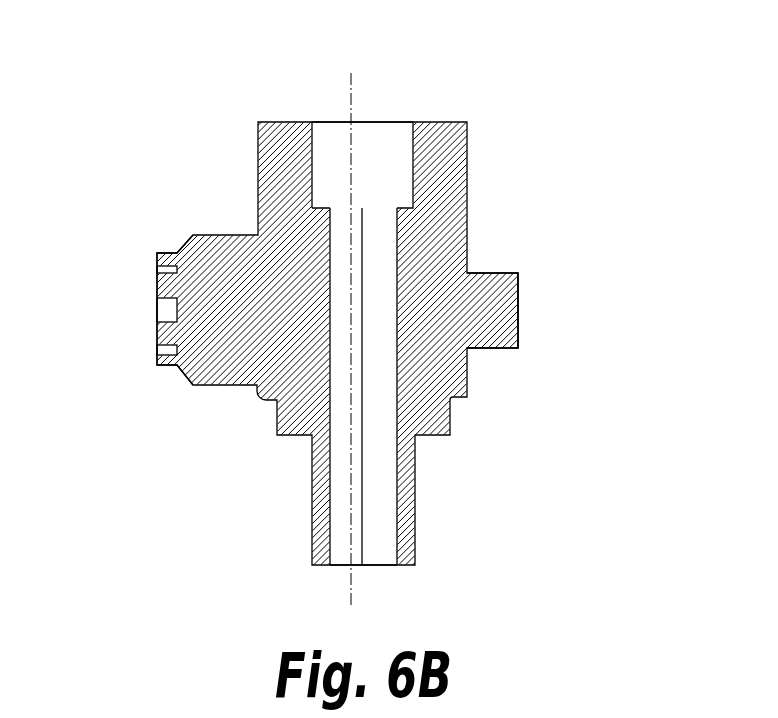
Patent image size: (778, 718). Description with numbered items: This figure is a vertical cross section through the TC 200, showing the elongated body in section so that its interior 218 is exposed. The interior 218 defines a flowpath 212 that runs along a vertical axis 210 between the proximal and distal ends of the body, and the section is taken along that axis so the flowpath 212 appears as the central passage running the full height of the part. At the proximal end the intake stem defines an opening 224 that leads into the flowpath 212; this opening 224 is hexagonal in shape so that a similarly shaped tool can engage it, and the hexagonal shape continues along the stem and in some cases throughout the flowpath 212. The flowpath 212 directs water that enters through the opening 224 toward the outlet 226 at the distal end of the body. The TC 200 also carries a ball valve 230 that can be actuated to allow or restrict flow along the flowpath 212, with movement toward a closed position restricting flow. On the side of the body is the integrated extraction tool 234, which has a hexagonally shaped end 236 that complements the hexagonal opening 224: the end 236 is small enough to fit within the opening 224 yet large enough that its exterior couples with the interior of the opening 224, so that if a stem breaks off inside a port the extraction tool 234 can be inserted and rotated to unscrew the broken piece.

The TC 200 is at (389, 315).
The vertical axis 210 is at (352, 138).
The flowpath 212 is at (393, 342).
The interior 218 is at (400, 263).
The opening 224 is at (379, 545).
The outlet 226 is at (393, 173).
The ball valve 230 is at (156, 287).
The extraction tool 234 is at (487, 295).
The hexagonally shaped end 236 is at (520, 323).